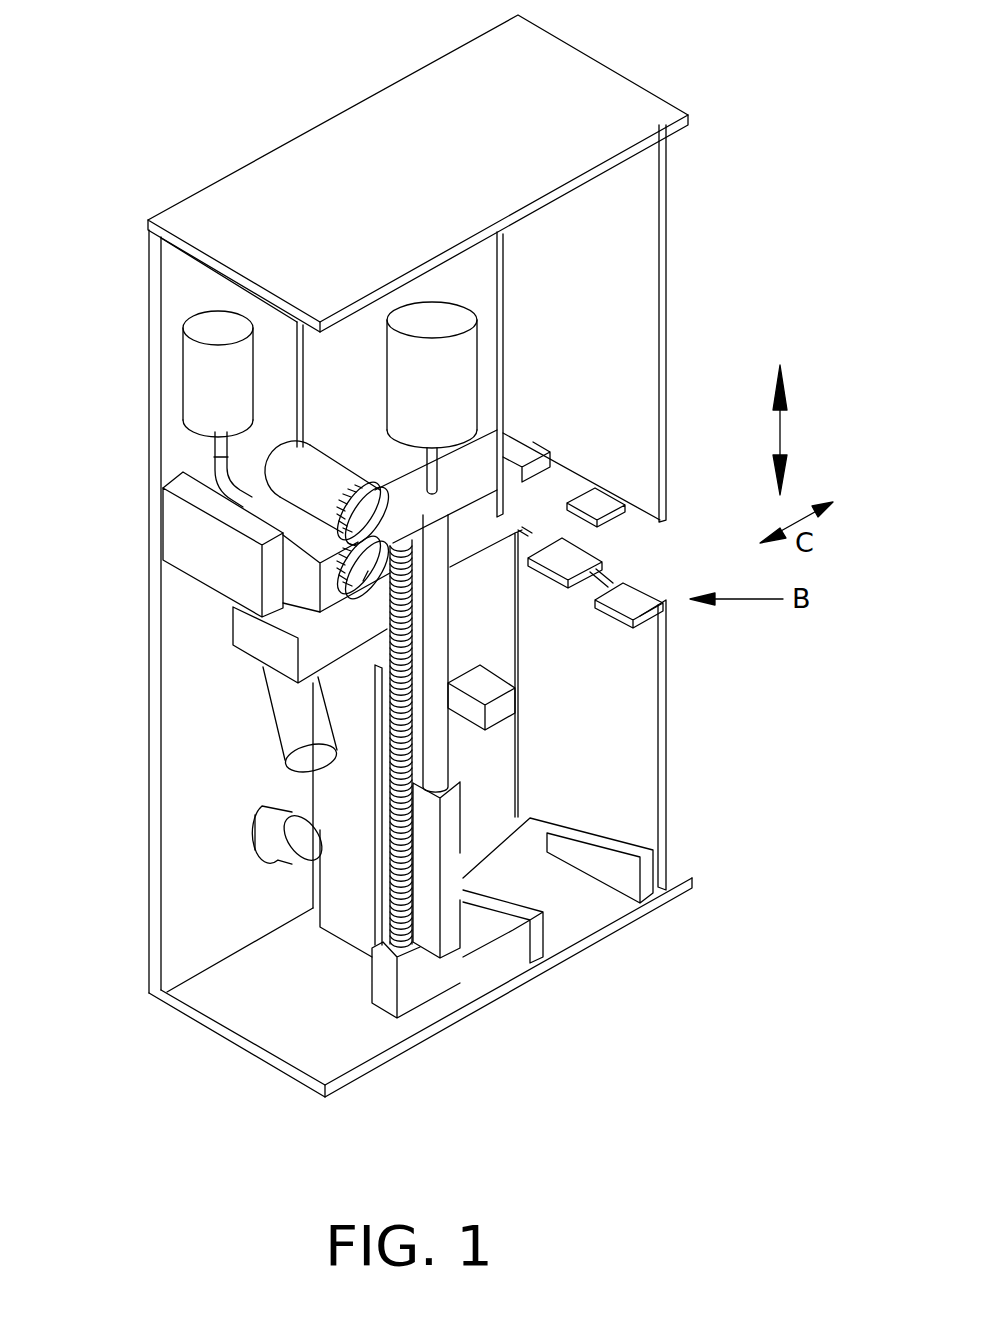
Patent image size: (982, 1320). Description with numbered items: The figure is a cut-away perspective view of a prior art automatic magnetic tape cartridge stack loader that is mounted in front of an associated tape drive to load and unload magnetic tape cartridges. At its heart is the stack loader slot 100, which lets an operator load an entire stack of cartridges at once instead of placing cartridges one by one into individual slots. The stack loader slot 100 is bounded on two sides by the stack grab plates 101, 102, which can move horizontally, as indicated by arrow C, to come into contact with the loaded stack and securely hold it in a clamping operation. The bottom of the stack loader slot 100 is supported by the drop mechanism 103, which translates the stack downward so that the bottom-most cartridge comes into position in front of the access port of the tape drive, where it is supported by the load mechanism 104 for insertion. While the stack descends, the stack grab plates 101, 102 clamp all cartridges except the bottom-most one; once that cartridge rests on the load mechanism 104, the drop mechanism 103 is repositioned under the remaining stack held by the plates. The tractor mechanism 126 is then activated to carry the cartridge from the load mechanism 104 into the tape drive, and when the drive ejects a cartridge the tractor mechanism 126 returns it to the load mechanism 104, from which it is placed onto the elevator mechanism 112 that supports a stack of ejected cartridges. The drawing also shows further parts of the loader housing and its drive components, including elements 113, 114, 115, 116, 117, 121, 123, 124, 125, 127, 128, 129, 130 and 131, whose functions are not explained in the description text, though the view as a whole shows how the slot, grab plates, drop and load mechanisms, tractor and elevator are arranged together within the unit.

The stack loader slot 100 is at (603, 271).
The stack grab plate 101 is at (507, 330).
The stack grab plate 102 is at (663, 330).
The drop mechanism 103 is at (607, 493).
The load mechanism 104 is at (490, 713).
The elevator mechanism 112 is at (610, 840).
The top plate 113 is at (453, 177).
The left side wall 114 is at (149, 500).
The base plate 115 is at (188, 1022).
The lead screw drive column 116 is at (420, 978).
The pads 117 is at (605, 583).
The cylinder 121 is at (453, 394).
The reservoir cylinder 123 is at (240, 394).
The tube 124 is at (215, 458).
The connector 125 is at (180, 467).
The tractor mechanism 126 is at (158, 533).
The cap 127 is at (262, 812).
The rod 128 is at (450, 773).
The motor 129 is at (340, 491).
The bracket 130 is at (233, 647).
The nozzle cylinder 131 is at (262, 733).